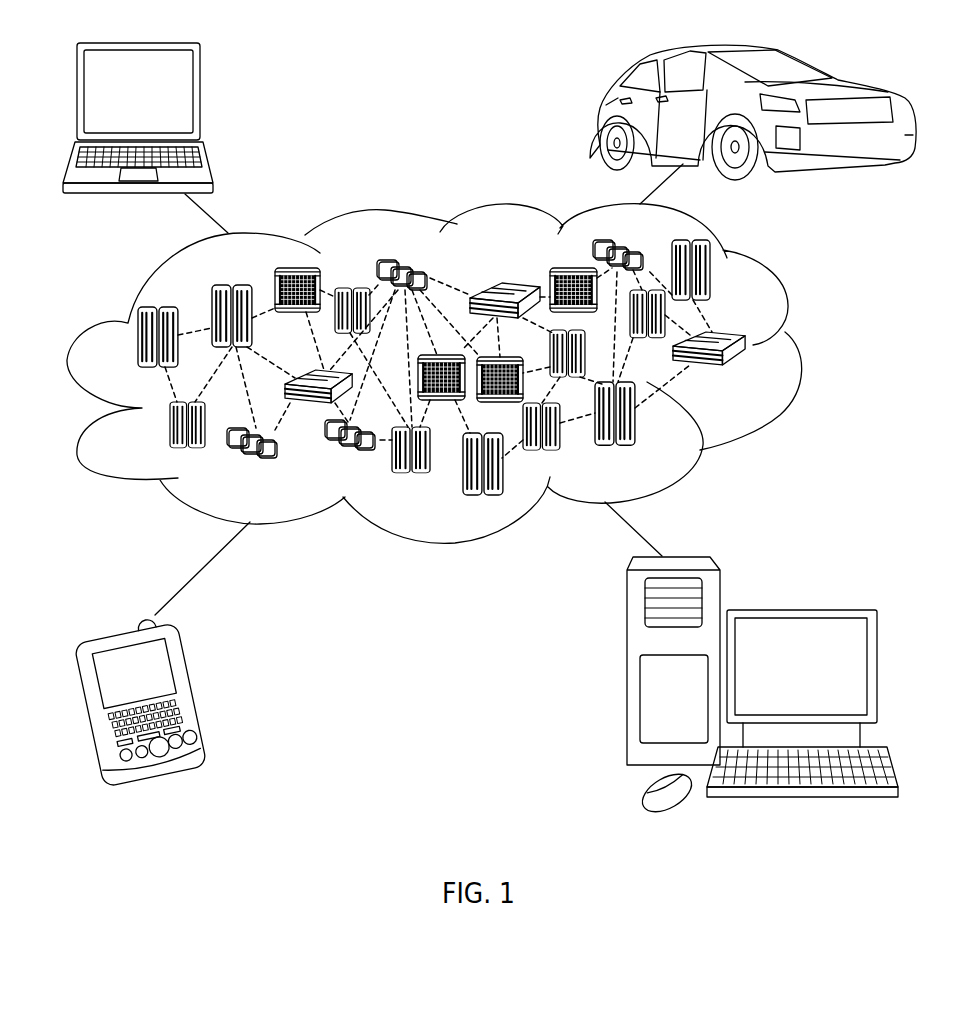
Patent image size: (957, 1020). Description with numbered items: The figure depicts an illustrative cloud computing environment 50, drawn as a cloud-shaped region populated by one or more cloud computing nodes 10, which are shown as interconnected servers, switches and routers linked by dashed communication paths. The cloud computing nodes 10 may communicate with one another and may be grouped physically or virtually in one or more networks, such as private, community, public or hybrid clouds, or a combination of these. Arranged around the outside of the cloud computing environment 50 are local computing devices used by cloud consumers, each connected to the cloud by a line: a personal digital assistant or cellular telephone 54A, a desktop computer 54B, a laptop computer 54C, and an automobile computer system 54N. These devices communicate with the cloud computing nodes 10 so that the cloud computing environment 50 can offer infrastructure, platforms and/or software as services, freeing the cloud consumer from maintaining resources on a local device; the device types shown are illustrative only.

The cloud computing nodes 10 is at (748, 375).
The cloud computing environment 50 is at (451, 374).
The personal digital assistant (PDA) or cellular telephone 54A is at (193, 696).
The desktop computer 54B is at (800, 610).
The laptop computer 54C is at (202, 101).
The automobile computer system 54N is at (601, 115).